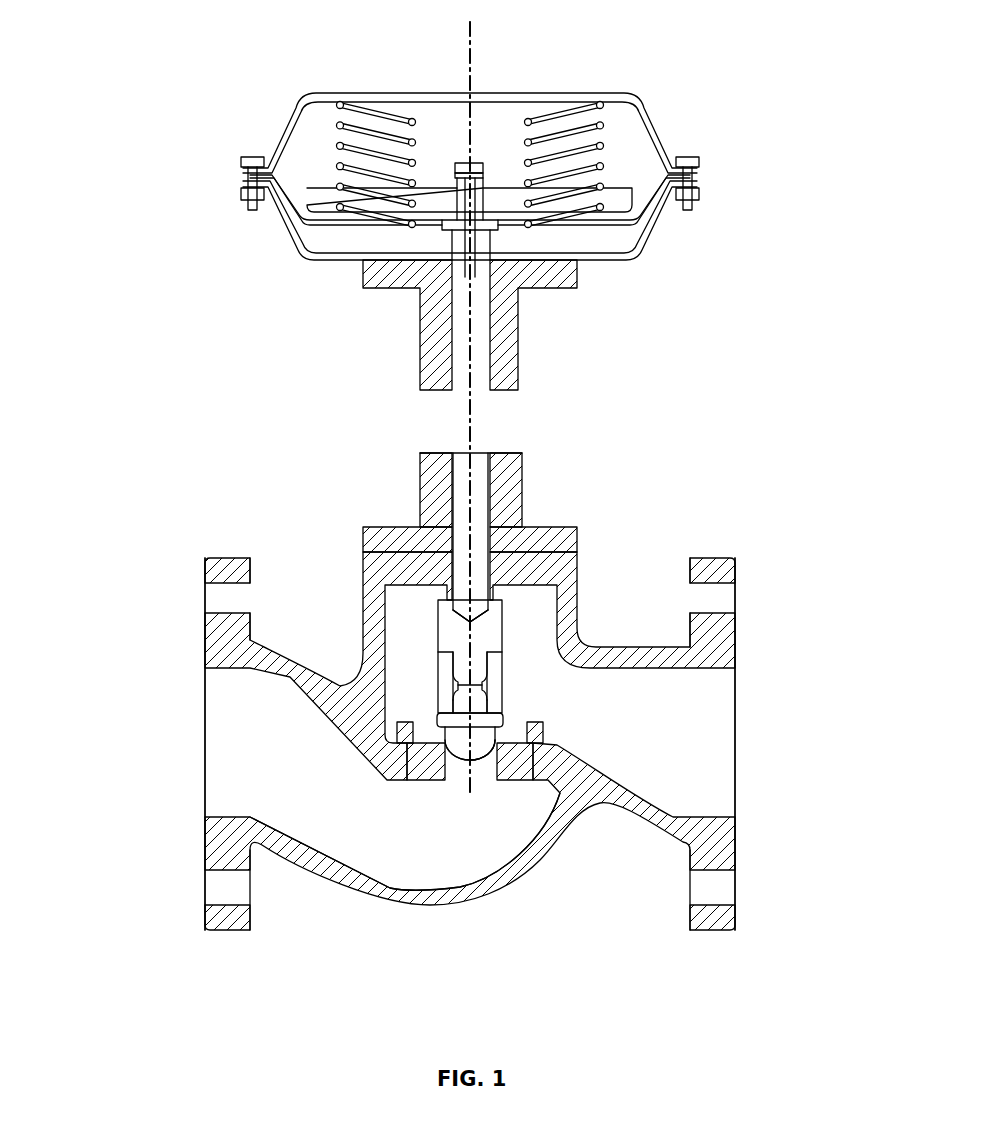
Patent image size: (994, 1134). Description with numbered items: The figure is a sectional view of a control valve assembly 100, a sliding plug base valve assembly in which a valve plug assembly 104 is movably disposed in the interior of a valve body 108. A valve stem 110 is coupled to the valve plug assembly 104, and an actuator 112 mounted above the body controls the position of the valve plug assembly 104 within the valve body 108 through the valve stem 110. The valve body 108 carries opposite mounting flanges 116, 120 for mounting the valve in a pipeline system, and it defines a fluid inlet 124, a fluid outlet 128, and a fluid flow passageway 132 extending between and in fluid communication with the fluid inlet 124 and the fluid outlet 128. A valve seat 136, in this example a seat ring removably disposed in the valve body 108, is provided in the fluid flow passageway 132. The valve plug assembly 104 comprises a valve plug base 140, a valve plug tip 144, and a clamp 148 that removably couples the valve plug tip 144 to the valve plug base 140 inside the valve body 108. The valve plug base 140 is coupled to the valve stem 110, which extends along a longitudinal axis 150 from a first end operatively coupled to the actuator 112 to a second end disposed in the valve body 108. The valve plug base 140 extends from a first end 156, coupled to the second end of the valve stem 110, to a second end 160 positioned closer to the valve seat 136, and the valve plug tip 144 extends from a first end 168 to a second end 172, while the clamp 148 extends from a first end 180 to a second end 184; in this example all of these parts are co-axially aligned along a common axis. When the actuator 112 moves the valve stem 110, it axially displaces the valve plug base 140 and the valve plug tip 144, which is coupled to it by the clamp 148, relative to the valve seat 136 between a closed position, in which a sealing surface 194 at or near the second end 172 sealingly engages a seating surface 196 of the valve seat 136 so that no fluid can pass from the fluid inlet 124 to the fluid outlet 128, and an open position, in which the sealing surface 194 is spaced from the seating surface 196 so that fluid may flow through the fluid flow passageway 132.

The control valve assembly 100 is at (141, 245).
The valve plug assembly 104 is at (433, 709).
The valve body 108 is at (392, 905).
The valve stem 110 is at (458, 338).
The actuator 112 is at (670, 132).
The mounting flange 116 is at (205, 568).
The mounting flange 120 is at (736, 566).
The fluid inlet 124 is at (237, 740).
The fluid outlet 128 is at (703, 716).
The fluid flow passageway 132 is at (373, 815).
The valve seat 136 is at (525, 772).
The valve plug base 140 is at (440, 605).
The valve plug tip 144 is at (480, 736).
The clamp 148 is at (447, 685).
The longitudinal axis 150 is at (471, 34).
The first end 156 is at (495, 593).
The second end 160 is at (478, 638).
The first end 168 is at (470, 616).
The second end 172 is at (462, 764).
The first end 180 is at (450, 640).
The second end 184 is at (485, 695).
The sealing surface 194 is at (490, 763).
The seating surface 196 is at (400, 750).